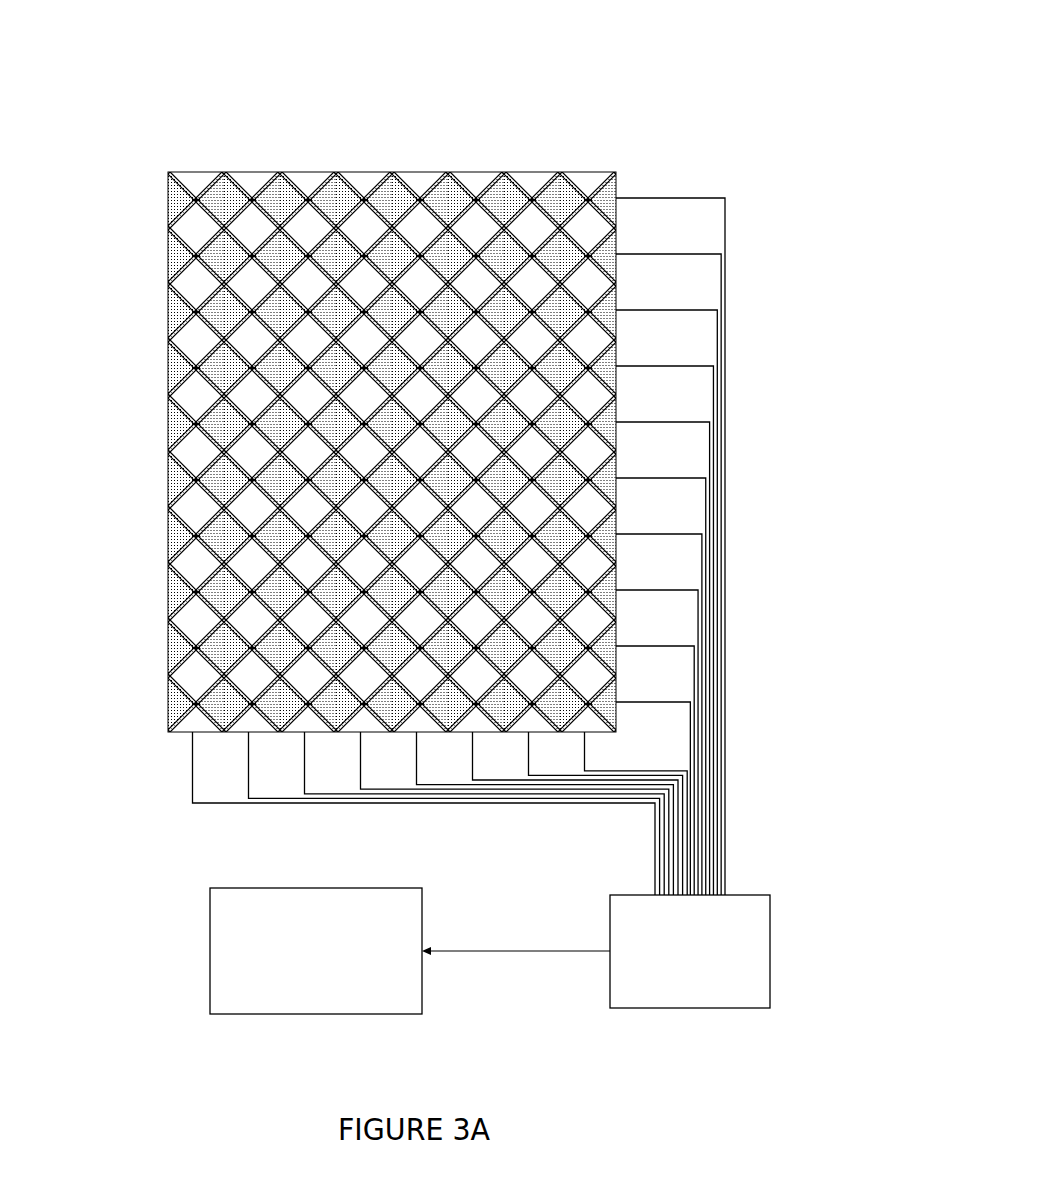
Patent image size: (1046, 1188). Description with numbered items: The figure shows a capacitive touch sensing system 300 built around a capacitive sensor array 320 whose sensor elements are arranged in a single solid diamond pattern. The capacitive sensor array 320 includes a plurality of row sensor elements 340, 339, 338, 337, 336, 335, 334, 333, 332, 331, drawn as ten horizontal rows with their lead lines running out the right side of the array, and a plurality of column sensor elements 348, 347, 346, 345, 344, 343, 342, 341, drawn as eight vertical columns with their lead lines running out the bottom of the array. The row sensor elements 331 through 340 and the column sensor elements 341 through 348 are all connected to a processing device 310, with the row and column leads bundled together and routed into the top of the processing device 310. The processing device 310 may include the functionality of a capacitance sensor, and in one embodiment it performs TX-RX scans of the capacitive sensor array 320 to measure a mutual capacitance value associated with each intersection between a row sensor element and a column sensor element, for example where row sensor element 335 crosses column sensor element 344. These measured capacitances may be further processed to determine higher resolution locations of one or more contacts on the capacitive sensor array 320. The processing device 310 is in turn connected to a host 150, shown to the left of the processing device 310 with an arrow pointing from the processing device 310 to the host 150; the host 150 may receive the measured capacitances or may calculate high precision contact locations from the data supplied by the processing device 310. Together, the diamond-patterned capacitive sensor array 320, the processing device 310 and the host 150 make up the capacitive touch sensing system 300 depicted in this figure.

The capacitive touch sensing system 300 is at (230, 86).
The capacitive sensor array 320 is at (614, 77).
The row sensor element 340 is at (670, 532).
The row sensor element 339 is at (668, 560).
The row sensor element 338 is at (666, 588).
The row sensor element 337 is at (664, 616).
The row sensor element 336 is at (663, 644).
The row sensor element 335 is at (661, 672).
The row sensor element 334 is at (659, 700).
The row sensor element 333 is at (657, 728).
The row sensor element 332 is at (655, 756).
The row sensor element 331 is at (653, 784).
The column sensor element 348 is at (424, 813).
The column sensor element 347 is at (454, 813).
The column sensor element 346 is at (485, 813).
The column sensor element 345 is at (515, 813).
The column sensor element 344 is at (545, 813).
The column sensor element 343 is at (576, 813).
The column sensor element 342 is at (606, 813).
The column sensor element 341 is at (636, 813).
The host 150 is at (331, 973).
The processing device 310 is at (706, 980).